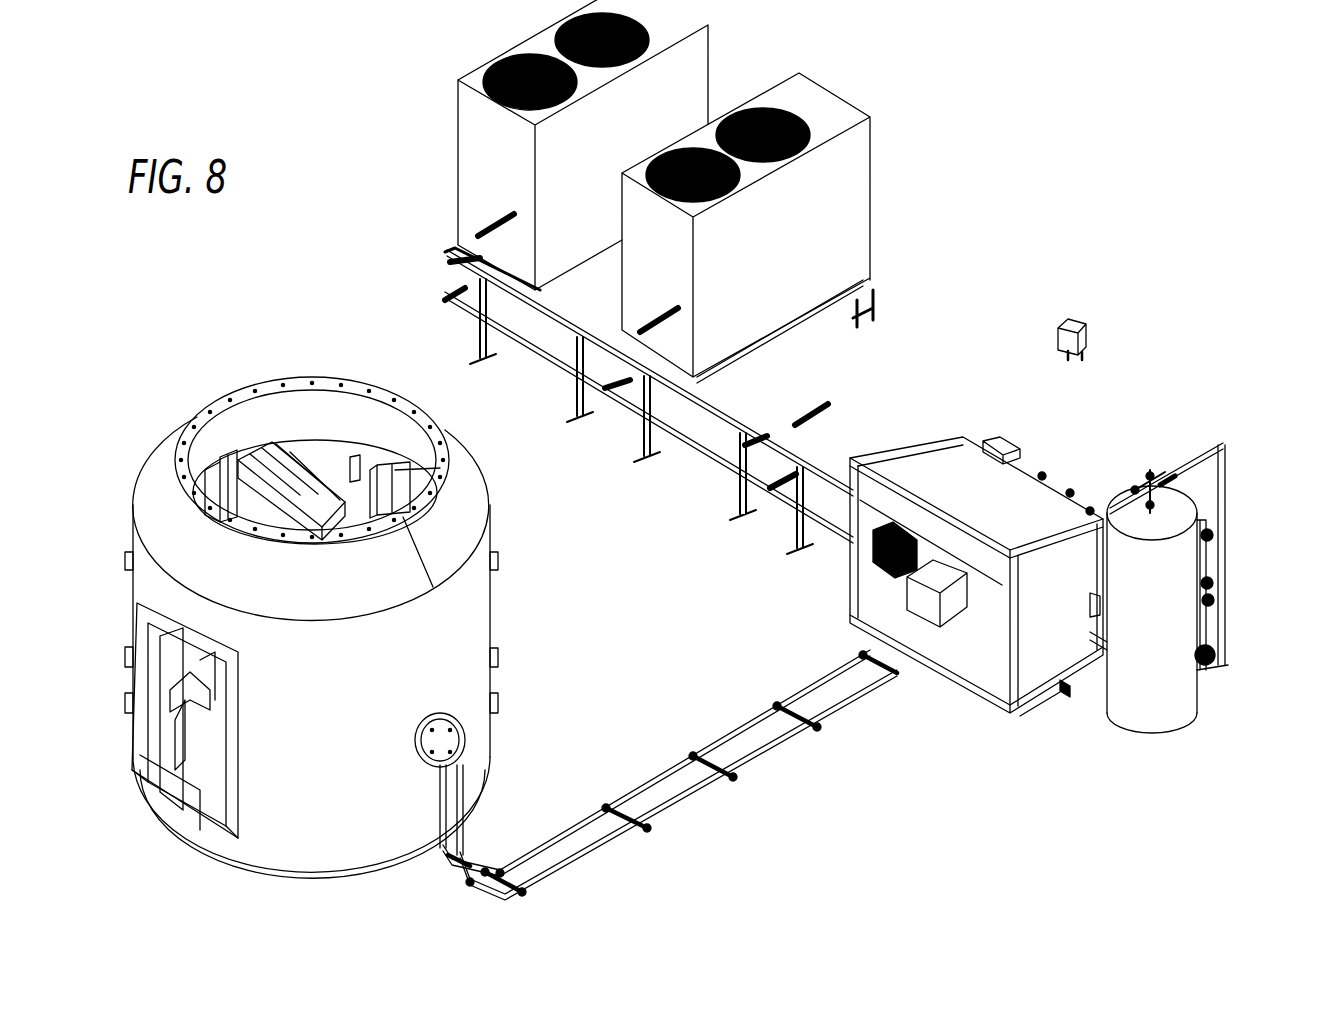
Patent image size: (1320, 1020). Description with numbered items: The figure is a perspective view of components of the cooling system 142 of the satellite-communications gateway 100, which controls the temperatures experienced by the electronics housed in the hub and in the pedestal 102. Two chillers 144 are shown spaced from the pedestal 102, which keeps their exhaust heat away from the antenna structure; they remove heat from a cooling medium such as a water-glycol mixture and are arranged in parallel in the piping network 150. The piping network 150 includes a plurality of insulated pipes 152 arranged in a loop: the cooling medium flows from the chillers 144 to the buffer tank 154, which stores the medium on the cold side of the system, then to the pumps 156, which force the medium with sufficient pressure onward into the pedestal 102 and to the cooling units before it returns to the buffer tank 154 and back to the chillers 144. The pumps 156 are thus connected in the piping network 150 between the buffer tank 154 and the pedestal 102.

The satellite-communications gateway 100 is at (1158, 13).
The pedestal 102 is at (492, 614).
The cooling system 142 is at (998, 268).
The chiller 144 is at (712, 50).
The piping network 150 is at (847, 704).
The pipes 152 is at (707, 457).
The buffer tank 154 is at (1173, 687).
The pumps 156 is at (912, 590).